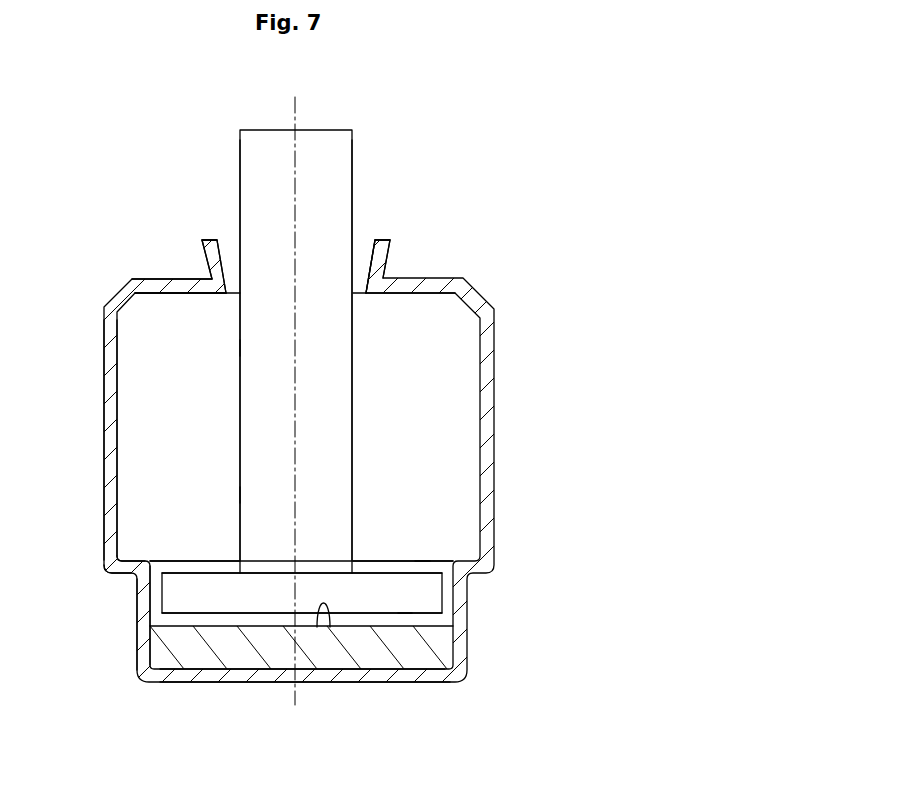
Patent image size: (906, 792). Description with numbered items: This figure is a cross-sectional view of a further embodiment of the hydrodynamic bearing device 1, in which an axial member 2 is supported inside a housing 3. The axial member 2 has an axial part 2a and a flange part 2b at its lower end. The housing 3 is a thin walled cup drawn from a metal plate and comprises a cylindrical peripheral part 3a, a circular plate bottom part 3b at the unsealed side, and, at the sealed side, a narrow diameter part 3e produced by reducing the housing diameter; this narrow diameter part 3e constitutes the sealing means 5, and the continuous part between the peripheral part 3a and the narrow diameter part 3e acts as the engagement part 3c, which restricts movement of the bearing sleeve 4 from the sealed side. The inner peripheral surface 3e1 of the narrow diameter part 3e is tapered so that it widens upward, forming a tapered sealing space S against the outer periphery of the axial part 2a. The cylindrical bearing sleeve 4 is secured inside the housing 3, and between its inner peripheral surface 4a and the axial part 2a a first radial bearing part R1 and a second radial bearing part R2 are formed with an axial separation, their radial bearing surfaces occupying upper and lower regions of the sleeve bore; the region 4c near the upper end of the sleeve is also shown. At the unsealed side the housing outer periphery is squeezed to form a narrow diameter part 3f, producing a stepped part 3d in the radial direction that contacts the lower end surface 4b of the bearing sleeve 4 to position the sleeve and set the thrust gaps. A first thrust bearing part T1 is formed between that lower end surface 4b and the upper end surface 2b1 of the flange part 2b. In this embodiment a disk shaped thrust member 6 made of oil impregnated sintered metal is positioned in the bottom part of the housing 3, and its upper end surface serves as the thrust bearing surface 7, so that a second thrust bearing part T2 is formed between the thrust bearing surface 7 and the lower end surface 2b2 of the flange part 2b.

The hydrodynamic bearing device 1 is at (511, 188).
The axial member 2 is at (332, 127).
The axial part 2a is at (247, 158).
The flange part 2b is at (250, 604).
The upper end surface of the flange part 2b1 is at (176, 572).
The lower end surface of the flange part 2b2 is at (182, 616).
The housing 3 is at (498, 418).
The peripheral part 3a is at (108, 418).
The bottom part 3b is at (290, 676).
The engagement part 3c is at (157, 282).
The stepped part 3d is at (118, 551).
The narrow diameter part 3e is at (384, 250).
The inner peripheral surface of the narrow diameter part 3e1 is at (228, 247).
The narrow diameter part 3f is at (136, 615).
The bearing sleeve 4 is at (445, 380).
The inner peripheral surface of the bearing sleeve 4a is at (240, 318).
The lower end surface of the bearing sleeve 4b is at (374, 568).
The upper portion of elastic member 4c is at (440, 278).
The sealing means 5 is at (384, 226).
The thrust member 6 is at (442, 638).
The thrust bearing surface 7 is at (330, 638).
The sealing space S is at (362, 248).
The first radial bearing part R1 is at (238, 348).
The second radial bearing part R2 is at (238, 495).
The first thrust bearing part T1 is at (424, 560).
The second thrust bearing part T2 is at (405, 616).